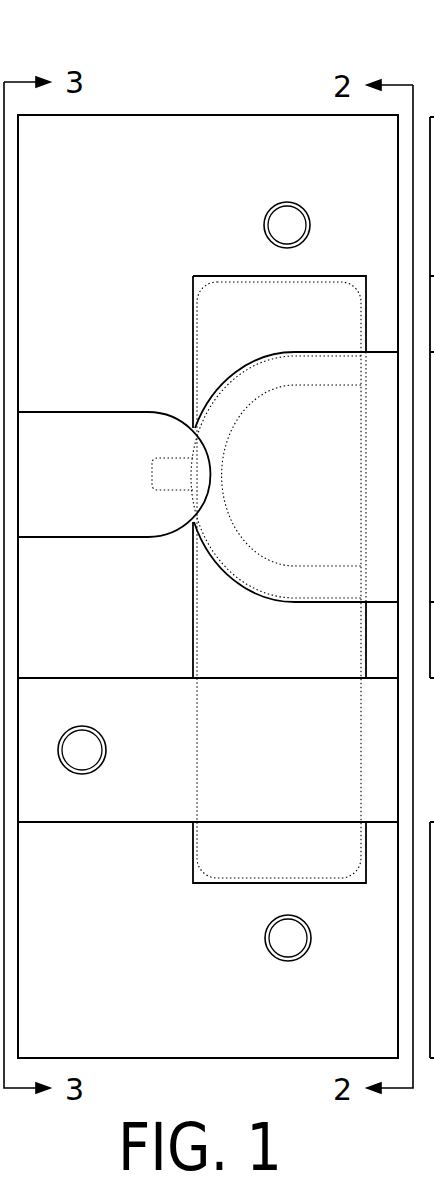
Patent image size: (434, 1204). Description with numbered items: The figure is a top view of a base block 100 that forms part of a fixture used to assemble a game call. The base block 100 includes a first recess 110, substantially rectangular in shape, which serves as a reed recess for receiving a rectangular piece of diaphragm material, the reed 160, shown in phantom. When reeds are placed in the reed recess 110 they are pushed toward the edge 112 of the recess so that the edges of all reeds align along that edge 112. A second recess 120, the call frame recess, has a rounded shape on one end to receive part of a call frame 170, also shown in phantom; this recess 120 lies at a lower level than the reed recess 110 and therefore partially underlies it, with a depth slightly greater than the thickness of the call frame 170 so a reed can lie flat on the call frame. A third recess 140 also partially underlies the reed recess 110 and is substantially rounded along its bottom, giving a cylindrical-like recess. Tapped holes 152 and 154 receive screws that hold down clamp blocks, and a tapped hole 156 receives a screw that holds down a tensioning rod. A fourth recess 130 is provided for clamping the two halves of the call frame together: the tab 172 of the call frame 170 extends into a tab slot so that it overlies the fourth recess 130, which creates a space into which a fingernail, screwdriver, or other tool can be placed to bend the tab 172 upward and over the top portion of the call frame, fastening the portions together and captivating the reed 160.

The base block 100 is at (252, 94).
The first recess 110 is at (292, 334).
The edge 112 is at (193, 600).
The second recess 120 is at (328, 496).
The fourth recess 130 is at (100, 516).
The third recess 140 is at (178, 809).
The tapped hole 152 is at (263, 226).
The tapped hole 154 is at (264, 935).
The tapped hole 156 is at (107, 750).
The reed 160 is at (193, 330).
The call frame 170 is at (243, 406).
The tab 172 is at (152, 473).